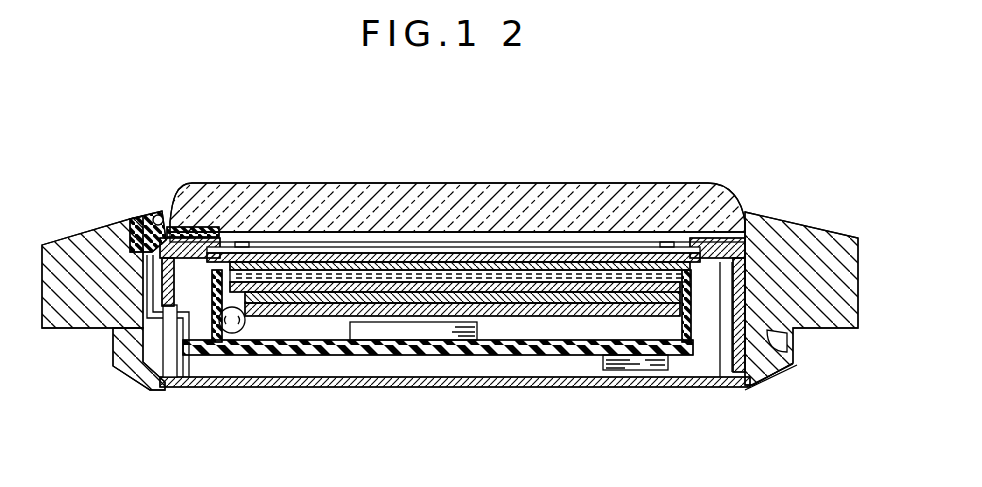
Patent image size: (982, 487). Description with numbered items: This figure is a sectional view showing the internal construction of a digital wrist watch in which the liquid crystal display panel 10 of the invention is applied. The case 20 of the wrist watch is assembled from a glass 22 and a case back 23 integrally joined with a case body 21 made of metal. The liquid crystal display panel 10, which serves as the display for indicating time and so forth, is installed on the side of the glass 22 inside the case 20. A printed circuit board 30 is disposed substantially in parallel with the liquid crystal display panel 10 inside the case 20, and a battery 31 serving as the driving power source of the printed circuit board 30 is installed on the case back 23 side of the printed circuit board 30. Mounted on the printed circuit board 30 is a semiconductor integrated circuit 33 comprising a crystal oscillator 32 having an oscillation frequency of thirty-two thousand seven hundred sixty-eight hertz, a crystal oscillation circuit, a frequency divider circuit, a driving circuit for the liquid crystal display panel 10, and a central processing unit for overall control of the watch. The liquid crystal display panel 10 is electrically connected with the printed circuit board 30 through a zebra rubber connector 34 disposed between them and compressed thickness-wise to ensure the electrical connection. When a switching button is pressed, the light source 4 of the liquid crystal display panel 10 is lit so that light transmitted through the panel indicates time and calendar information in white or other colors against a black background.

The light source 4 is at (304, 312).
The liquid crystal display panel 10 is at (376, 254).
The case 20 is at (152, 180).
The case body 21 is at (808, 228).
The glass 22 is at (623, 185).
The case back 23 is at (770, 380).
The printed circuit board 30 is at (530, 372).
The battery 31 is at (644, 372).
The crystal oscillator 32 is at (246, 335).
The semiconductor integrated circuit 33 is at (417, 372).
The zebra rubber connector 34 is at (192, 373).